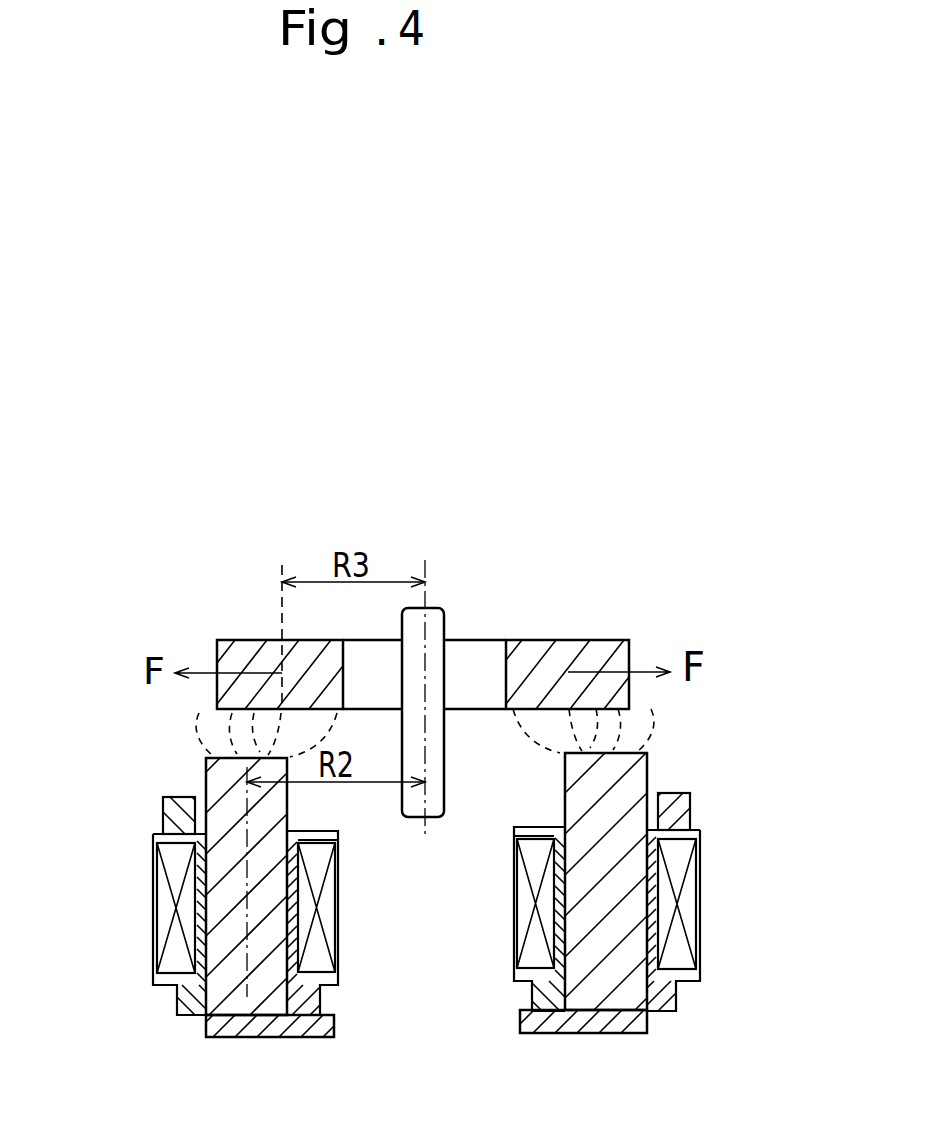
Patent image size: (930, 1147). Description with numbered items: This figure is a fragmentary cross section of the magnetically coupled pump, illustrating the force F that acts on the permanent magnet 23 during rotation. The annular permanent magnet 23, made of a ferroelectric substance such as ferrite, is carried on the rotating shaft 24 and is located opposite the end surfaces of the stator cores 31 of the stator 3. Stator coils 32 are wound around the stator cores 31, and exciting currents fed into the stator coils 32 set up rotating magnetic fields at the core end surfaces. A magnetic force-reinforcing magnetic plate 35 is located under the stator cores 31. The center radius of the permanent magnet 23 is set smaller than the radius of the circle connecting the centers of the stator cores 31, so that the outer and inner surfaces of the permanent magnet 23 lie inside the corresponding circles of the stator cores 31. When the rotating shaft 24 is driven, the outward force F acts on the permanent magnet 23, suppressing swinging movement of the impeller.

The stator 3 is at (128, 809).
The permanent magnet 23 is at (240, 648).
The rotating shaft 24 is at (425, 819).
The stator core 31 is at (222, 777).
The stator coil 32 is at (163, 913).
The magnetic force-reinforcing magnetic plate 35 is at (580, 1034).